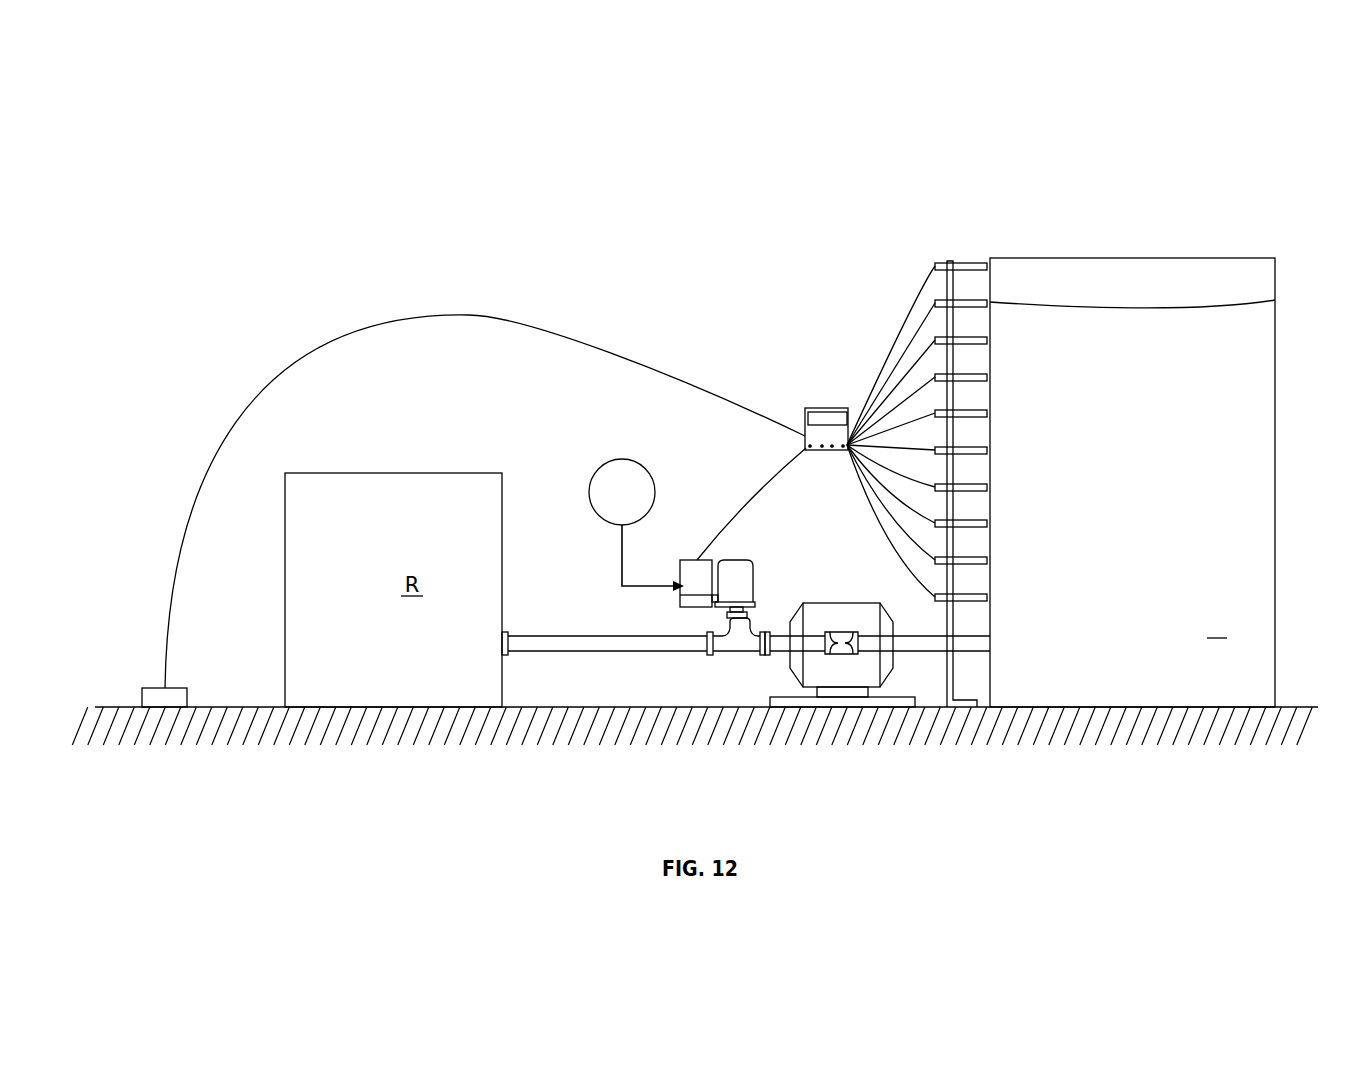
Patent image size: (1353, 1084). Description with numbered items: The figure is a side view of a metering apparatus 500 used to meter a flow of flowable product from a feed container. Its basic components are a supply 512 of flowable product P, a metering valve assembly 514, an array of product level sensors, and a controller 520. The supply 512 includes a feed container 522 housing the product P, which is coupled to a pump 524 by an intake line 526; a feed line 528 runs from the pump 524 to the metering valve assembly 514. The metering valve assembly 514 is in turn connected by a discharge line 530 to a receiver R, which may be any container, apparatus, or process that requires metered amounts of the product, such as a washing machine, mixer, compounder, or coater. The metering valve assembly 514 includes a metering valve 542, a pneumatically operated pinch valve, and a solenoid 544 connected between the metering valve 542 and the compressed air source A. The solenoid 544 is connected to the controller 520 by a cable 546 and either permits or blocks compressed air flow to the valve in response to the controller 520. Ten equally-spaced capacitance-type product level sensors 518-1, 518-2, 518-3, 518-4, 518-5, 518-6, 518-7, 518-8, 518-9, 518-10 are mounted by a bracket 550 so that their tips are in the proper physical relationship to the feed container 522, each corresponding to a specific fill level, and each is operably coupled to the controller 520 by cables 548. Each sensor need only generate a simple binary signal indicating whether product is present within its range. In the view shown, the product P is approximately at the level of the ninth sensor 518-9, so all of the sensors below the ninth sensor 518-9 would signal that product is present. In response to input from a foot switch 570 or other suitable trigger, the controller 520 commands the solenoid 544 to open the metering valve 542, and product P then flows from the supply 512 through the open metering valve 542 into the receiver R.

The metering apparatus 500 is at (652, 227).
The supply 512 is at (967, 801).
The metering valve assembly 514 is at (704, 508).
The product level sensor 518-1 is at (978, 598).
The product level sensor 518-2 is at (978, 560).
The product level sensor 518-3 is at (978, 522).
The product level sensor 518-4 is at (978, 486).
The product level sensor 518-5 is at (978, 449).
The product level sensor 518-6 is at (978, 412).
The product level sensor 518-7 is at (978, 376).
The product level sensor 518-8 is at (978, 339).
The ninth sensor 518-9 is at (978, 302).
The product level sensor 518-10 is at (978, 265).
The controller 520 is at (818, 408).
The feed container 522 is at (1272, 668).
The pump 524 is at (828, 611).
The intake line 526 is at (915, 635).
The feed line 528 is at (786, 646).
The discharge line 530 is at (608, 642).
The metering valve 542 is at (743, 571).
The solenoid 544 is at (688, 570).
The cable 546 is at (740, 503).
The cables 548 is at (905, 305).
The bracket 550 is at (947, 665).
The foot switch 570 is at (147, 692).